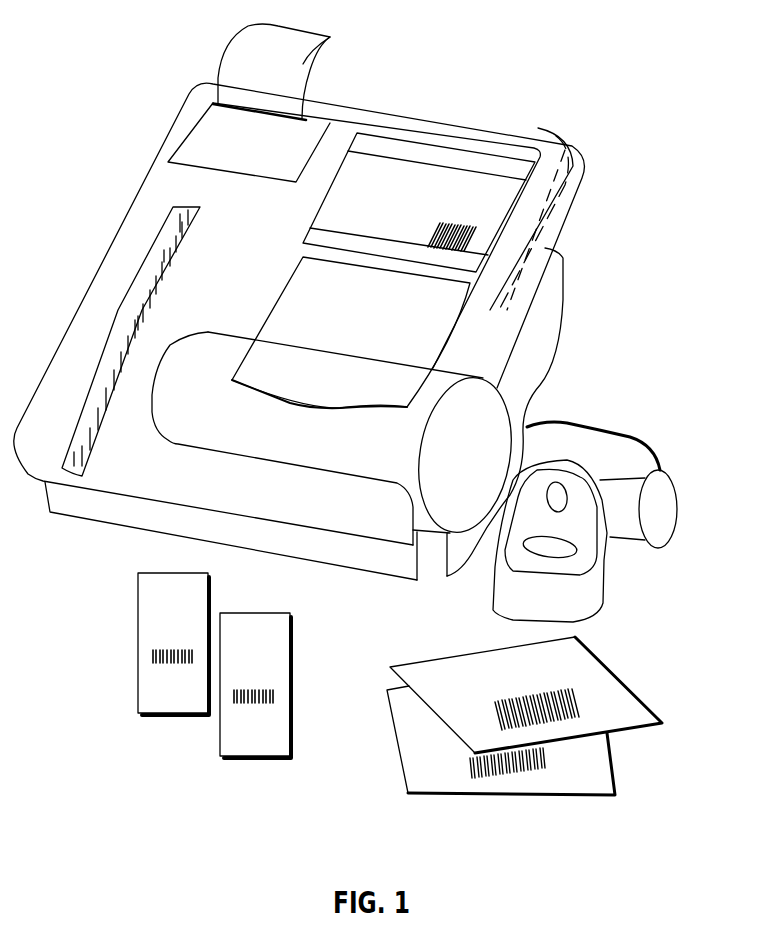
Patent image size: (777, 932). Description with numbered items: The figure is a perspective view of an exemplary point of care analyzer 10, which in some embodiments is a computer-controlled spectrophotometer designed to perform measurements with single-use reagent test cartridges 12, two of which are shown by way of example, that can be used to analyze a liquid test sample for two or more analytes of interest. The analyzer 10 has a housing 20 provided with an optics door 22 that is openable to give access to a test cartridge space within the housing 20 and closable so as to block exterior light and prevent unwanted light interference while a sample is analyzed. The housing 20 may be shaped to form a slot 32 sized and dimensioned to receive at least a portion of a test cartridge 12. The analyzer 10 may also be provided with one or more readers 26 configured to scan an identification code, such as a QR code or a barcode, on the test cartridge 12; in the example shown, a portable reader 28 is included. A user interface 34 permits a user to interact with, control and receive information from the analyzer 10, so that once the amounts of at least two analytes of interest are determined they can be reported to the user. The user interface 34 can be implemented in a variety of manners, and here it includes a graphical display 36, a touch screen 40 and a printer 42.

The analyzer 10 is at (497, 41).
The test cartridge 12 is at (138, 685).
The housing 20 is at (541, 324).
The optics door 22 is at (300, 410).
The reader 26 is at (618, 537).
The portable reader 28 is at (650, 497).
The slot 32 is at (110, 327).
The user interface 34 is at (470, 167).
The graphical display 36 is at (498, 180).
The touch screen 40 is at (430, 233).
The printer 42 is at (303, 44).